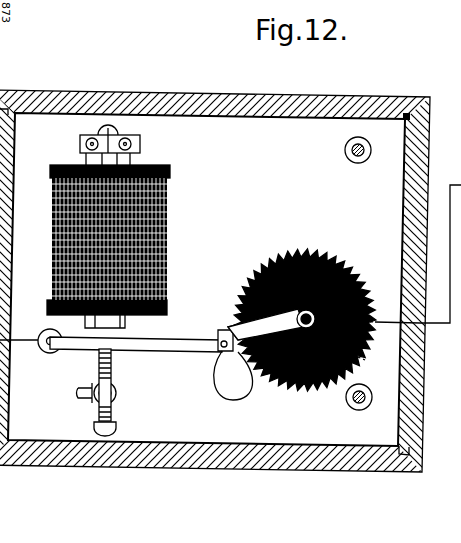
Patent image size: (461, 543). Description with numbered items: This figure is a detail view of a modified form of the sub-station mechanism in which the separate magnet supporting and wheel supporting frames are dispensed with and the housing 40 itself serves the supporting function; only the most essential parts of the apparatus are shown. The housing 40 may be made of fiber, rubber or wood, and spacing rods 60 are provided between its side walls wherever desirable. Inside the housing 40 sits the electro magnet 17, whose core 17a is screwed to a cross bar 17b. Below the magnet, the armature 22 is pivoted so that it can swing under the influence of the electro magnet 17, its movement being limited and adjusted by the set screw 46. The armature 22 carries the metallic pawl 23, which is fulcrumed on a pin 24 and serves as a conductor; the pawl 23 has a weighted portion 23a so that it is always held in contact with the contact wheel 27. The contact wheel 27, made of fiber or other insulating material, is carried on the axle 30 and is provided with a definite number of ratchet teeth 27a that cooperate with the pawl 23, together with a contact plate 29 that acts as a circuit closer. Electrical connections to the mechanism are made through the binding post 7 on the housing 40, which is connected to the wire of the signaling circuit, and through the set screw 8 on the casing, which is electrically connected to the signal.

The binding post 7 is at (40, 337).
The set screw 8 is at (361, 280).
The electro magnet 17 is at (168, 210).
The core 17a is at (138, 158).
The cross bar 17b is at (140, 139).
The armature 22 is at (136, 352).
The pawl 23 is at (224, 333).
The weighted portion 23a is at (228, 392).
The pin 24 is at (218, 347).
The contact wheel 27 is at (358, 358).
The ratchet teeth 27a is at (298, 390).
The contact plate 29 is at (240, 301).
The axle 30 is at (312, 253).
The housing 40 is at (215, 281).
The set screw 46 is at (96, 421).
The spacing rods 60 is at (368, 148).